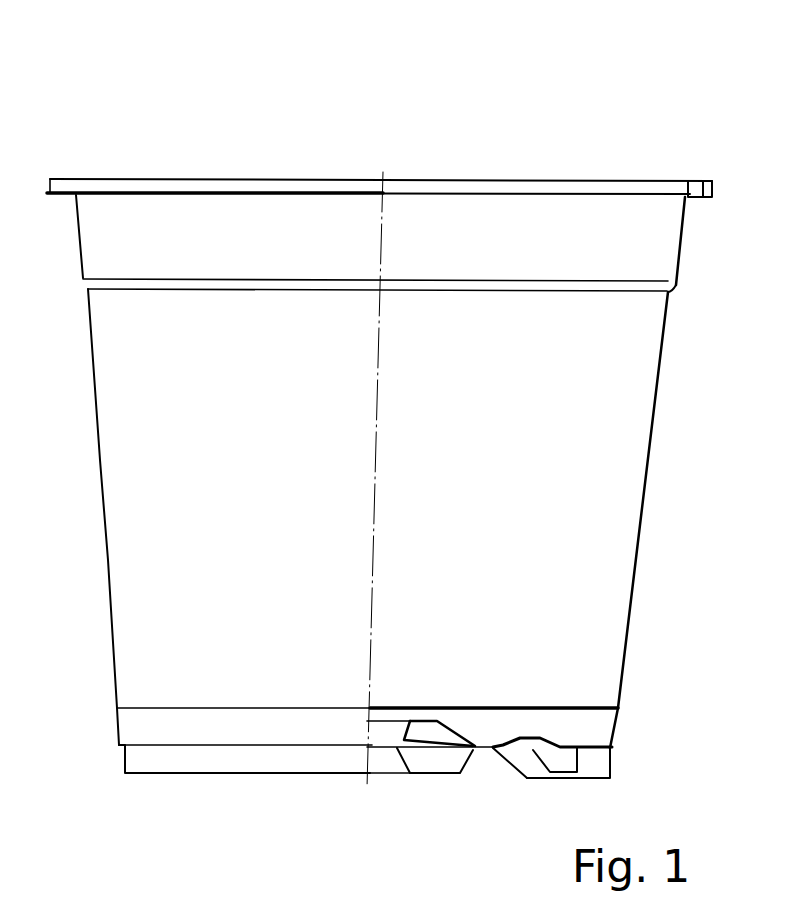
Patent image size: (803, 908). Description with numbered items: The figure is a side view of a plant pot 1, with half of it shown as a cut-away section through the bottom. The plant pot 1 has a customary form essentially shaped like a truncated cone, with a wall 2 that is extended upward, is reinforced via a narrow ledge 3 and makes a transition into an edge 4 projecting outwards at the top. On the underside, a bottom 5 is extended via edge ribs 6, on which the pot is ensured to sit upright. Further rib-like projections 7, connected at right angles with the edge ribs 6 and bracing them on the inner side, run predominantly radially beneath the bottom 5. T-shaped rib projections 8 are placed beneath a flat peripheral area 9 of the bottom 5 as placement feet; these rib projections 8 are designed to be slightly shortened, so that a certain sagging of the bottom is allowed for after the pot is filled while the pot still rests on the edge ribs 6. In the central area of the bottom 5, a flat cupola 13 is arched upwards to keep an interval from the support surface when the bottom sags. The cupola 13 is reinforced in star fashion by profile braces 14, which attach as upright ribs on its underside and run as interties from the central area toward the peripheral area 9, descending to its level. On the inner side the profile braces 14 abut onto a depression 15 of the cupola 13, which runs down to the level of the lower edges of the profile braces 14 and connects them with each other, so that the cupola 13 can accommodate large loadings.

The plant pot 1 is at (548, 97).
The container wall 2 is at (283, 441).
The narrow ledge 3 is at (85, 283).
The rim flange 4 is at (220, 183).
The bottom 5 is at (493, 745).
The edge ribs 6 is at (240, 765).
The rib-like projections 7 is at (553, 758).
The rib projections 8 is at (447, 762).
The flat peripheral area 9 is at (580, 740).
The flat cupola 13 is at (455, 704).
The profile braces 14 is at (423, 733).
The depression 15 is at (387, 730).